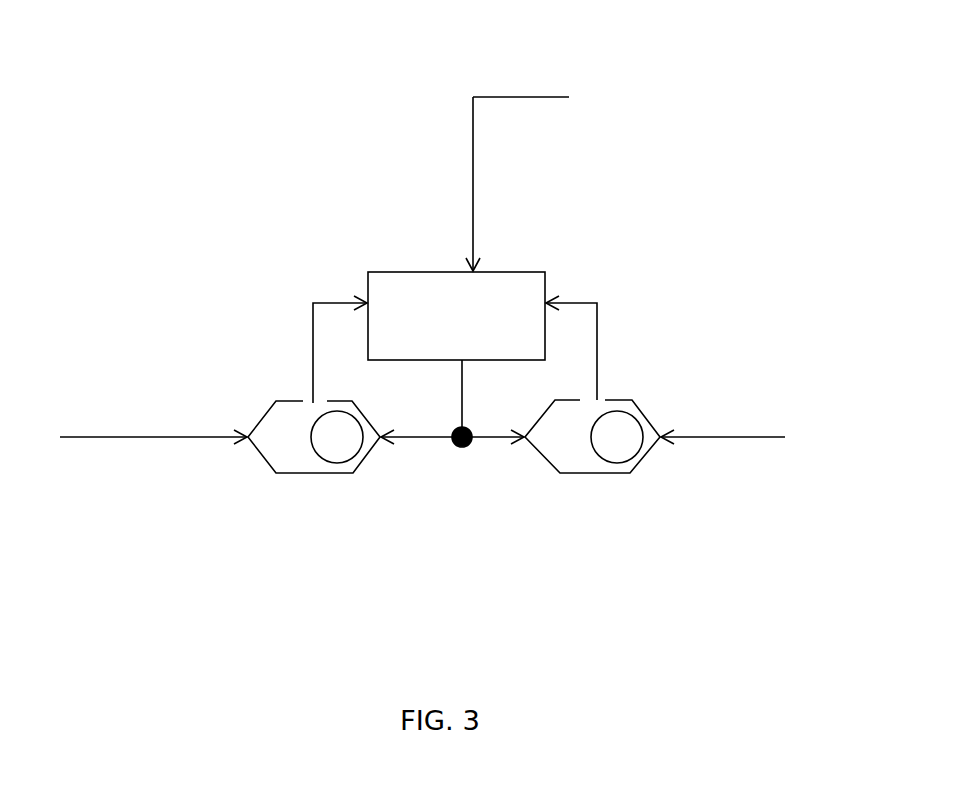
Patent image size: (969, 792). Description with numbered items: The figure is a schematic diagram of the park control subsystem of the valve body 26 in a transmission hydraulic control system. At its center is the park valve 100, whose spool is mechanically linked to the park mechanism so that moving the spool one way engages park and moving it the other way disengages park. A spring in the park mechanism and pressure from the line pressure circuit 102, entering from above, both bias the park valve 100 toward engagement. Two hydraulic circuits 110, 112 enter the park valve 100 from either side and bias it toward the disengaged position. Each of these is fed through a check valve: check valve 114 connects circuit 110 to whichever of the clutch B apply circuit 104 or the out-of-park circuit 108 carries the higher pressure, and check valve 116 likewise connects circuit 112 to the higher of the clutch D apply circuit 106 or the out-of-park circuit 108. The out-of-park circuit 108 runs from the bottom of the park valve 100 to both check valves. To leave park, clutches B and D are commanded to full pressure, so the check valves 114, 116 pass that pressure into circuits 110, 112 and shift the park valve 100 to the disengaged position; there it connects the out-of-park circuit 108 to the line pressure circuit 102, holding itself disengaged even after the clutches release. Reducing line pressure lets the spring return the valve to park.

The valve body 26 is at (222, 140).
The park valve 100 is at (387, 272).
The line pressure circuit 102 is at (516, 97).
The clutch B apply circuit 104 is at (713, 439).
The clutch D apply circuit 106 is at (122, 440).
The out-of-park circuit 108 is at (435, 440).
The hydraulic circuit 110 is at (598, 335).
The hydraulic circuit 112 is at (312, 328).
The check valve 114 is at (643, 405).
The check valve 116 is at (262, 412).